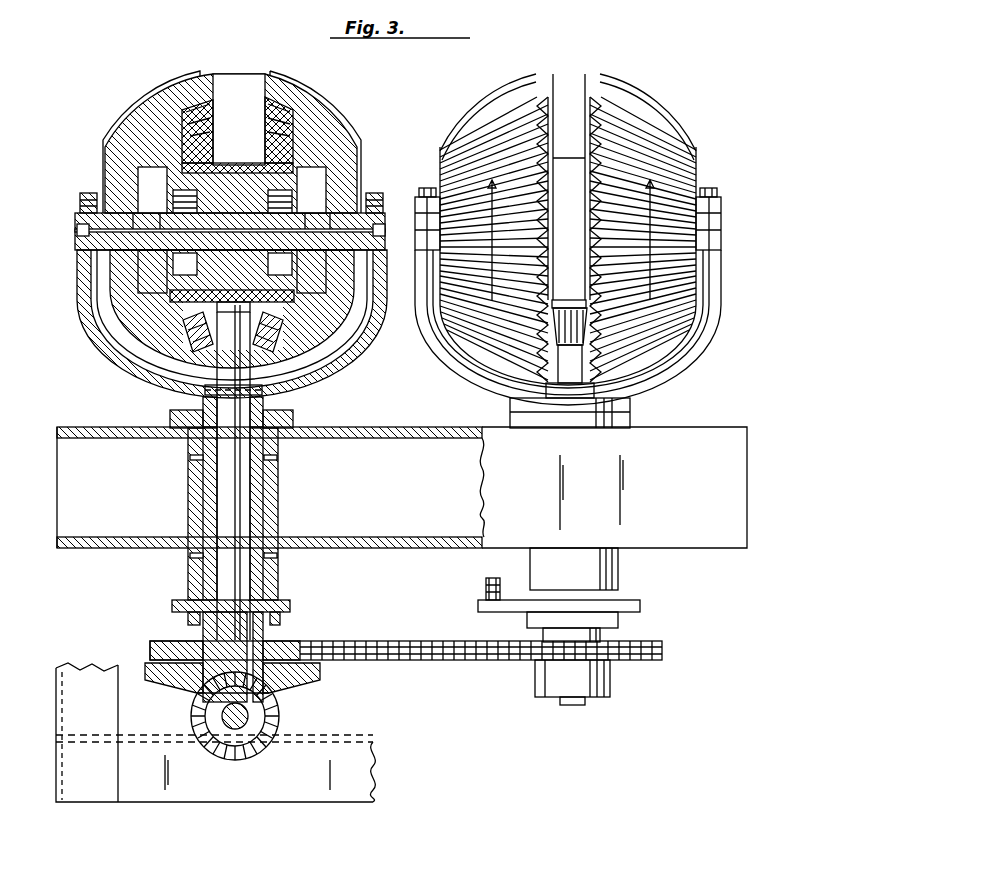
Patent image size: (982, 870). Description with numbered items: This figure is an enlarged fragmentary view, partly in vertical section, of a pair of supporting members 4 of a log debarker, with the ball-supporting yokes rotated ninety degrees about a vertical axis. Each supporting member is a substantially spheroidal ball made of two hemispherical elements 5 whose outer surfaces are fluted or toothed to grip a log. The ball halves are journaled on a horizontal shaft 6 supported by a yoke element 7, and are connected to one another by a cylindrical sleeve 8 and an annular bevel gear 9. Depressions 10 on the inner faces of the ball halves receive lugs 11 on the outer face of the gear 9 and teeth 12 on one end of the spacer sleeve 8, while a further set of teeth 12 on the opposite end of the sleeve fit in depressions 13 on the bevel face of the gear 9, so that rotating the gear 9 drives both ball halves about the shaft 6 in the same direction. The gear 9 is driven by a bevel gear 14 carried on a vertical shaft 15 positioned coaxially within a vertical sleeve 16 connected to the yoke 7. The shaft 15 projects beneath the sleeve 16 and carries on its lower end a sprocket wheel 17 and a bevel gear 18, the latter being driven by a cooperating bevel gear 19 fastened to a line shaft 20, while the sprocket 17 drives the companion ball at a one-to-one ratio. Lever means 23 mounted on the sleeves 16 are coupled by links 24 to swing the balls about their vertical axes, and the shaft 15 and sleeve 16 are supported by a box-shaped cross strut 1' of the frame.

The cross strut 1' is at (402, 475).
The supporting member 4 is at (355, 117).
The hemispherical element 5 is at (236, 100).
The shaft 6 is at (382, 220).
The yoke element 7 is at (346, 366).
The cylindrical sleeve 8 is at (220, 170).
The annular bevel gear 9 is at (284, 320).
The depression 10 is at (172, 326).
The lug 11 is at (266, 286).
The teeth 12 is at (172, 286).
The depression 13 is at (290, 128).
The bevel gear 14 is at (188, 332).
The vertical shaft 15 is at (245, 577).
The vertical sleeve 16 is at (268, 497).
The sprocket wheel 17 is at (298, 644).
The bevel gear 18 is at (305, 688).
The bevel gear 19 is at (268, 722).
The line shaft 20 is at (224, 715).
The lever means 23 is at (290, 605).
The link 24 is at (486, 590).